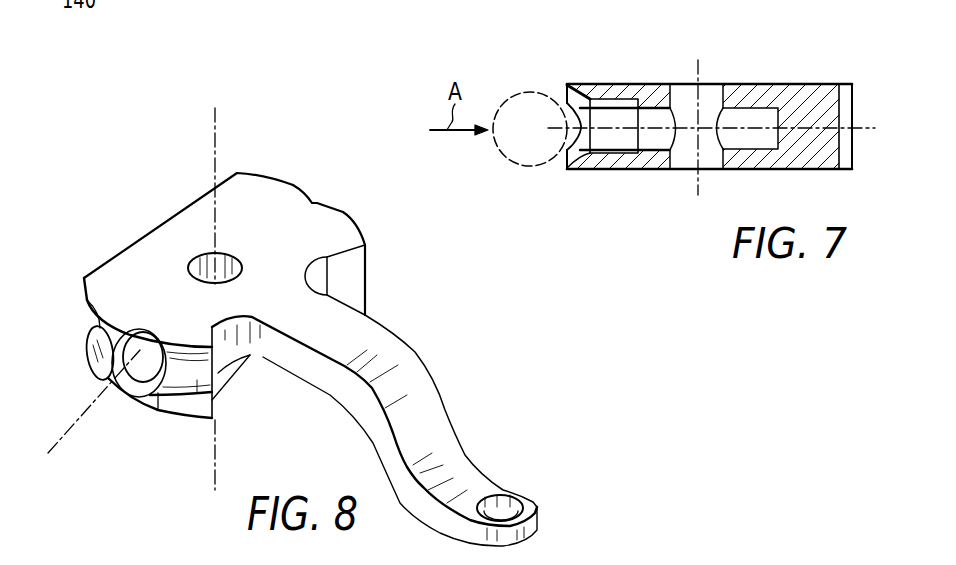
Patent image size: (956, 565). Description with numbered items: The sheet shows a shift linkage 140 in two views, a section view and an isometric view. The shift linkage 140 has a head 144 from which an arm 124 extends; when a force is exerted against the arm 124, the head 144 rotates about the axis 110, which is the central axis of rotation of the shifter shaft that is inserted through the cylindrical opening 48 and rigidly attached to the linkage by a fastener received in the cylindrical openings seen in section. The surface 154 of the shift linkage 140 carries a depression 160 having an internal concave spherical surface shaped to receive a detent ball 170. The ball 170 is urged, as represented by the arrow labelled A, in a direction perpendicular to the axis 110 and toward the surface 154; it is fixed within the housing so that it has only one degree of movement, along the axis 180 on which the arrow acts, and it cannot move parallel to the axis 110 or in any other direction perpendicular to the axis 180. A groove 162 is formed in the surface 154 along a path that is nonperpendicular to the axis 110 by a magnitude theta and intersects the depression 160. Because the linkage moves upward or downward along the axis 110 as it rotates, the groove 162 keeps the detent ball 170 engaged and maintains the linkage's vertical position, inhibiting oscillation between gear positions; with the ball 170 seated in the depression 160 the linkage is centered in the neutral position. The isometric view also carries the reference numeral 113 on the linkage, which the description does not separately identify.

In FIG. 7, the cylindrical opening 48 is at (677, 96).
In FIG. 8, the cylindrical opening 48 is at (223, 254).
In FIG. 7, the axis 110 is at (700, 185).
In FIG. 8, the axis 110 is at (215, 123).
In FIG. 8, the lever 113 is at (322, 197).
In FIG. 8, the arm 124 is at (432, 416).
In FIG. 7, the shift linkage 140 is at (860, 66).
In FIG. 8, the shift linkage 140 is at (93, 227).
In FIG. 7, the head 144 is at (771, 85).
In FIG. 8, the head 144 is at (160, 239).
In FIG. 7, the surface 154 is at (565, 170).
In FIG. 8, the surface 154 is at (185, 410).
In FIG. 7, the depression 160 is at (568, 98).
In FIG. 8, the depression 160 is at (136, 378).
In FIG. 7, the groove 162 is at (577, 143).
In FIG. 8, the groove 162 is at (97, 343).
In FIG. 7, the detent ball 170 is at (502, 150).
In FIG. 8, the axis 180 is at (55, 447).